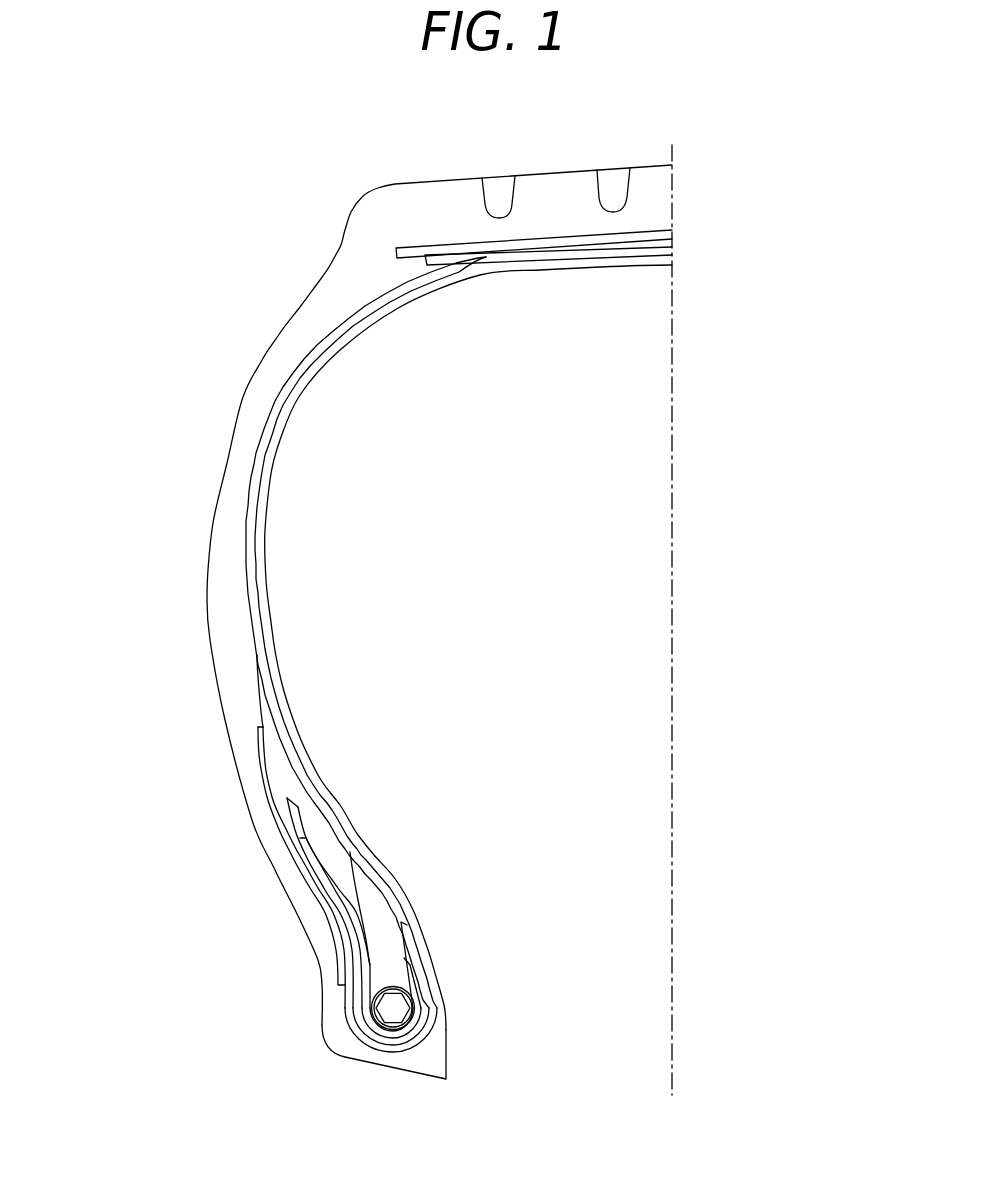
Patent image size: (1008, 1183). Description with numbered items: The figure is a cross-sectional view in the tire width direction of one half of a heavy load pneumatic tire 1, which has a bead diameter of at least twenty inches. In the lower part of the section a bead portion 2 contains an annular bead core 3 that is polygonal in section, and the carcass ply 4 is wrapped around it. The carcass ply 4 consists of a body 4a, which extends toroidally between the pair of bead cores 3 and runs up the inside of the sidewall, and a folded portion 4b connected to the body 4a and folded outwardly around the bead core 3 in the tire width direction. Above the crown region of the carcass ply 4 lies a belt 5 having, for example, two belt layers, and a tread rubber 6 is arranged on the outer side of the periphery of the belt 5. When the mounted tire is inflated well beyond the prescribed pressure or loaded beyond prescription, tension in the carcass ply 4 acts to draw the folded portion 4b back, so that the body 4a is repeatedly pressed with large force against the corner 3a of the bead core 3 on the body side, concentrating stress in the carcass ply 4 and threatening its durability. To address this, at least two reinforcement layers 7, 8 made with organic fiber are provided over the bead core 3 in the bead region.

The heavy load pneumatic tire 1 is at (306, 224).
The bead portion 2 is at (441, 936).
The bead core 3 is at (393, 1012).
The corner of the bead core 3a is at (415, 1009).
The carcass ply 4 is at (311, 654).
The body of the carcass ply 4a is at (263, 447).
The folded portion of the carcass ply 4b is at (297, 805).
The belt 5 is at (442, 246).
The tread rubber 6 is at (563, 196).
The reinforcement layer 7 is at (372, 1025).
The reinforcement layer 8 is at (384, 1030).